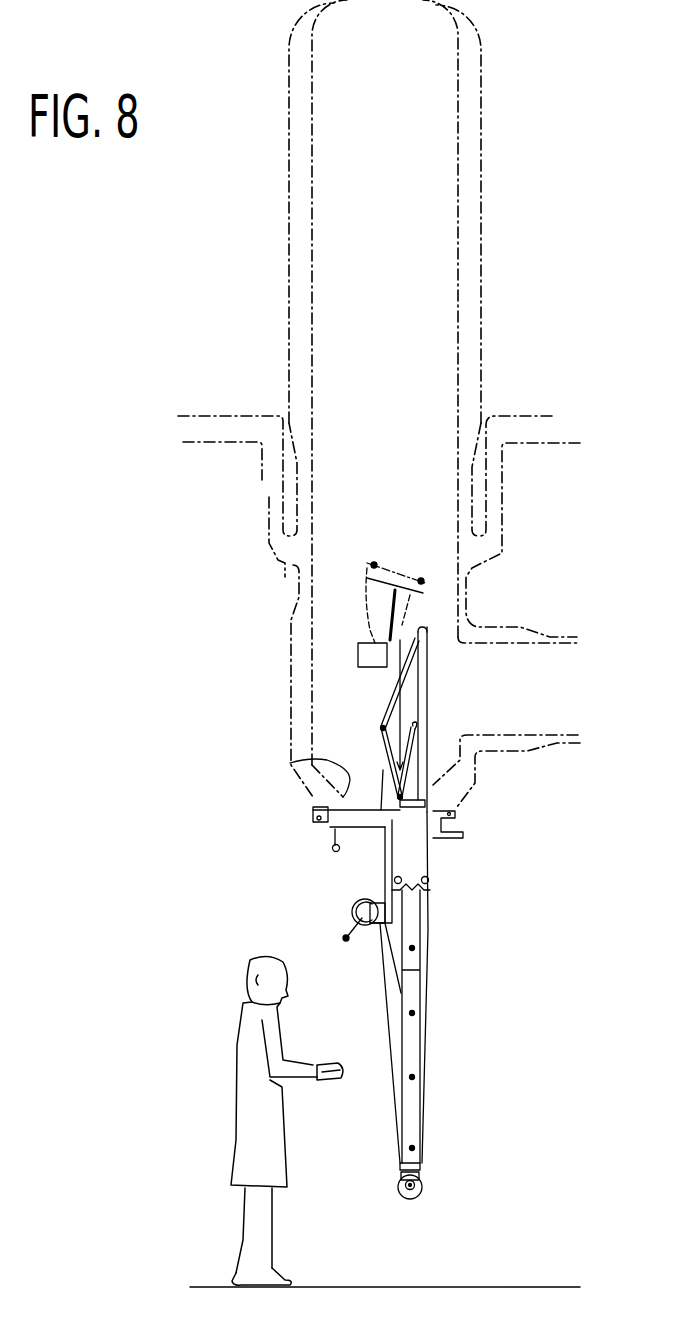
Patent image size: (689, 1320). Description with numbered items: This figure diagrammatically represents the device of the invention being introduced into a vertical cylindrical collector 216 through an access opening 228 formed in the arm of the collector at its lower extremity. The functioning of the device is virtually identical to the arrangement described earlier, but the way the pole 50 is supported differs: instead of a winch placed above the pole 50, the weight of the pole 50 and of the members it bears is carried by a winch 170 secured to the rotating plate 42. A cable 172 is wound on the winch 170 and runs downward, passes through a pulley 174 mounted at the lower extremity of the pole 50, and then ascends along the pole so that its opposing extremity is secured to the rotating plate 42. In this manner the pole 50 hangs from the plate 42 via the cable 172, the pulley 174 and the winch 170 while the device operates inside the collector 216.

The collector 216 is at (433, 293).
The access opening 228 is at (295, 762).
The rotating plate 42 is at (360, 828).
The winch 170 is at (343, 916).
The cable 172 is at (385, 1035).
The pole 50 is at (412, 1090).
The pulley 174 is at (423, 1190).